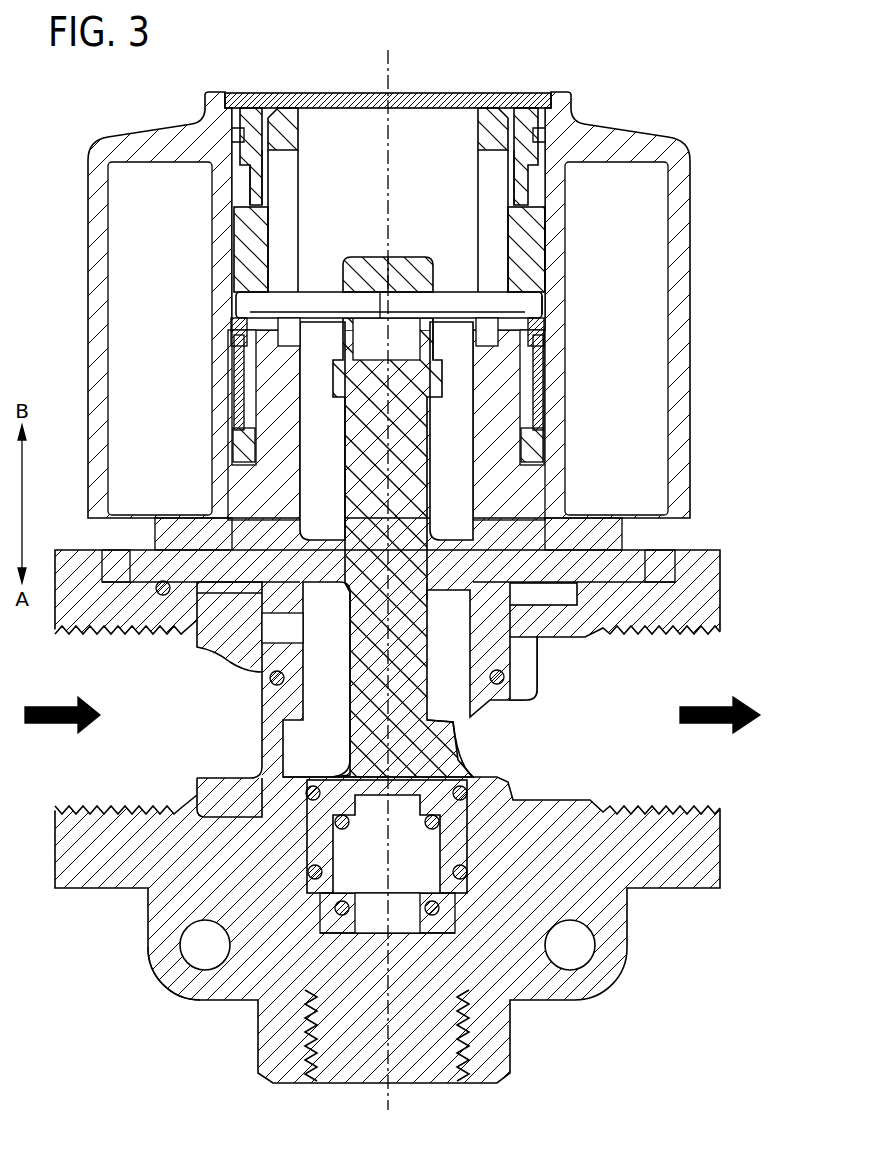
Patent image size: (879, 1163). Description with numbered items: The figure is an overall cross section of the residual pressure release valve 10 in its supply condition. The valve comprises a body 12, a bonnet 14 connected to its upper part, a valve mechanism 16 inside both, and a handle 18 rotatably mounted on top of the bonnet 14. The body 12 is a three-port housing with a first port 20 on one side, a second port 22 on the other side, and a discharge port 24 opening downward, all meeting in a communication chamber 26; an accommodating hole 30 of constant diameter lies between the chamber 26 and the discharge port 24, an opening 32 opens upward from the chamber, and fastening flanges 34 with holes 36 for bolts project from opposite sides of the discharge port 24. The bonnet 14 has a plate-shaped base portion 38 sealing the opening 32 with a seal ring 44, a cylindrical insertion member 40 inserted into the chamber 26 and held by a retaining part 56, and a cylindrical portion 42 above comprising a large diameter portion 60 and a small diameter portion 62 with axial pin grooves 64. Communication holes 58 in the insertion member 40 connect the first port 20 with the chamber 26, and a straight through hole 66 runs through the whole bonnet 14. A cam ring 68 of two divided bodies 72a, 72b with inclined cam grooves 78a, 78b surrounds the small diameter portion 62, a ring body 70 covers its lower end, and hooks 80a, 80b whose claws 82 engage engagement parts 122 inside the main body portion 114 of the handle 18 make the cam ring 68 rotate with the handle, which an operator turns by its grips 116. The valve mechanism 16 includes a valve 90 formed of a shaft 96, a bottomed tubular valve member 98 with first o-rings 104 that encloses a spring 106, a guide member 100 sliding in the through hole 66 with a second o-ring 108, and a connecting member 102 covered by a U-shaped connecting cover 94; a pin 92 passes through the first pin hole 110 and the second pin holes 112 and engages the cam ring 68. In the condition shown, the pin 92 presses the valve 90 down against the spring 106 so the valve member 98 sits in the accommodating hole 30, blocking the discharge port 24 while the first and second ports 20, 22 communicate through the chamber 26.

The residual pressure release valve 10 is at (78, 93).
The body 12 is at (195, 1012).
The bonnet 14 is at (232, 458).
The valve mechanism 16 is at (442, 487).
The handle 18 is at (620, 122).
The first port 20 is at (60, 777).
The second port 22 is at (708, 777).
The discharge port 24 is at (432, 1086).
The communication chamber 26 is at (297, 745).
The accommodating hole 30 is at (420, 920).
The opening 32 is at (132, 562).
The fastening flanges 34 is at (166, 985).
The holes 36 is at (200, 945).
The base portion 38 is at (645, 562).
The insertion member 40 is at (505, 672).
The cylindrical portion 42 is at (258, 197).
The seal ring 44 is at (165, 598).
The retaining part 56 is at (516, 702).
The communication holes 58 is at (272, 625).
The large diameter portion 60 is at (292, 520).
The small diameter portion 62 is at (293, 128).
The pin grooves 64 is at (299, 185).
The through hole 66 is at (244, 445).
The cam ring 68 is at (552, 228).
The ring body 70 is at (540, 385).
The divided body 72a is at (228, 259).
The divided body 72b is at (549, 266).
The cam groove 78a is at (240, 305).
The cam groove 78b is at (544, 305).
The hook 80a is at (249, 108).
The hook 80b is at (520, 108).
The claws 82 is at (240, 138).
The valve 90 is at (452, 430).
The pin 92 is at (455, 330).
The connecting cover 94 is at (398, 262).
The shaft 96 is at (348, 698).
The valve member 98 is at (400, 812).
The guide member 100 is at (322, 520).
The connecting member 102 is at (245, 335).
The first o-rings 104 is at (310, 795).
The spring 106 is at (342, 918).
The second o-ring 108 is at (448, 595).
The first pin hole 110 is at (378, 300).
The second pin holes 112 is at (345, 290).
The main body portion 114 is at (437, 94).
The grips 116 is at (96, 340).
The engagement parts 122 is at (264, 170).